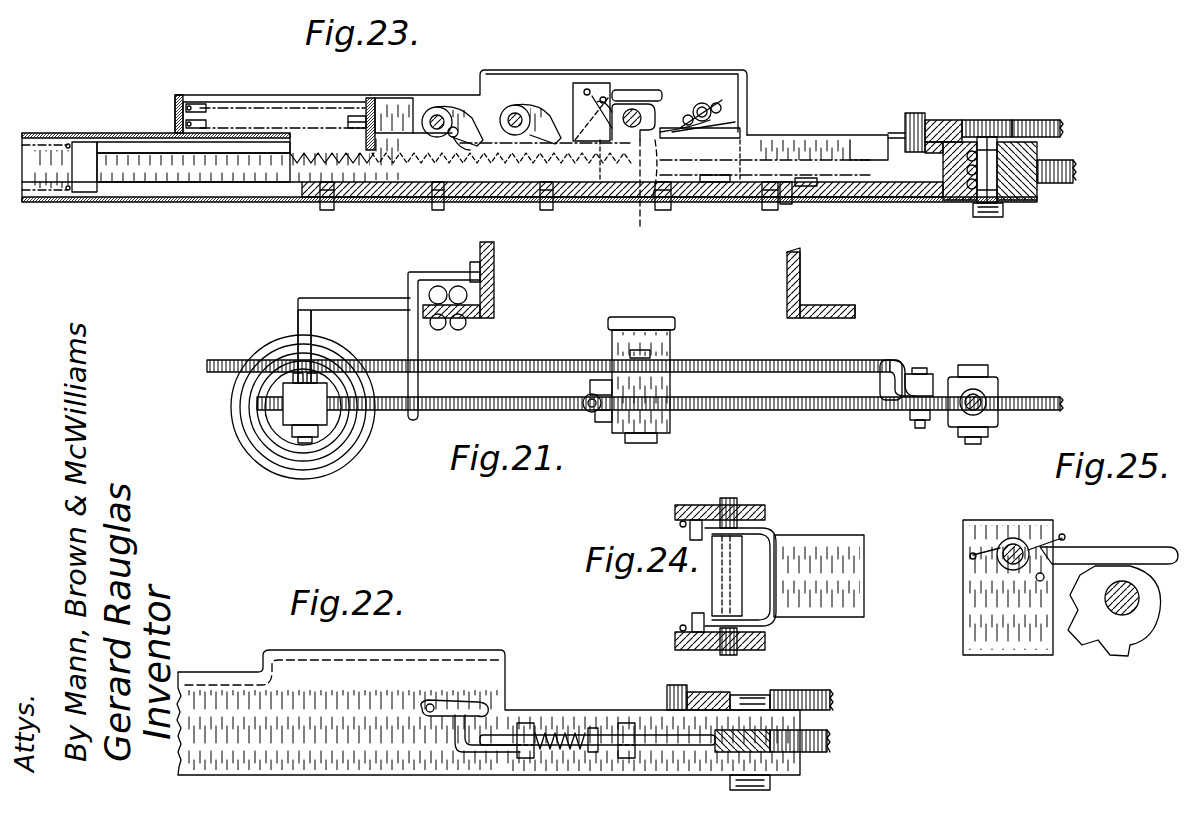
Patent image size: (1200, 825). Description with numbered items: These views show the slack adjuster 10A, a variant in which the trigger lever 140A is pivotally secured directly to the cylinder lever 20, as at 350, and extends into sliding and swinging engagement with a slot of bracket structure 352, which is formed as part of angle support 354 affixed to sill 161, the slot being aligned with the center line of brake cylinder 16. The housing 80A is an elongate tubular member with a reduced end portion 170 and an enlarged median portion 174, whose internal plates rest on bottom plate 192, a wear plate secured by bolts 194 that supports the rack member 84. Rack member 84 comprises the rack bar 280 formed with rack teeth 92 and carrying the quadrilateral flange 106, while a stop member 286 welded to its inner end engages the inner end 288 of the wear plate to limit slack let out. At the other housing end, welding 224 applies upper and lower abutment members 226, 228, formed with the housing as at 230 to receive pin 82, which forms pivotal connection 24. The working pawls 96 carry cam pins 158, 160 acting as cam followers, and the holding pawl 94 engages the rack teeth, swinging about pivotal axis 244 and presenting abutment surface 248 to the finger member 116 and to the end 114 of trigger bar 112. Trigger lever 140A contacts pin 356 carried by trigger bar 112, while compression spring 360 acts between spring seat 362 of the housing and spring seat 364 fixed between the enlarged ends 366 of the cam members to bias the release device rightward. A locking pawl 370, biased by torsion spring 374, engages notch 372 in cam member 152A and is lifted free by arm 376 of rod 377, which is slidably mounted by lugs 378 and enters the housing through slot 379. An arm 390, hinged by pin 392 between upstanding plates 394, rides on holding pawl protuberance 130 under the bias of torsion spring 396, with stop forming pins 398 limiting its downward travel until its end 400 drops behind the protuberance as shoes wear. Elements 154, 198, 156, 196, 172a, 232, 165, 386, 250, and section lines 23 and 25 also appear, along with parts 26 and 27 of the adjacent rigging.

In FIG. 23, the reduced end portion 170 is at (100, 118).
In FIG. 23, the quadrilateral flange 106 is at (85, 180).
In FIG. 23, the rack bar 280 is at (282, 167).
In FIG. 23, the rack member 84 is at (225, 178).
In FIG. 23, the rack teeth 92 is at (333, 184).
In FIG. 23, the slack adjuster 10A is at (303, 222).
In FIG. 21, the slack adjuster 10A is at (688, 330).
In FIG. 22, the slack adjuster 10A is at (250, 635).
In FIG. 23, the compression spring 360 is at (286, 100).
In FIG. 23, the spring seat 362 is at (205, 104).
In FIG. 23, the spring seat 364 is at (360, 118).
In FIG. 23, the enlarged ends 366 is at (392, 98).
In FIG. 23, the cover housing 154 is at (447, 128).
In FIG. 23, the pivot pins 198 is at (430, 112).
In FIG. 23, the working pawls 96 is at (445, 108).
In FIG. 23, the cam arm 156 is at (435, 132).
In FIG. 23, the cam pin 160 is at (457, 139).
In FIG. 23, the upstanding plates 394 is at (588, 141).
In FIG. 24, the upstanding plates 394 is at (770, 515).
In FIG. 25, the upstanding plates 394 is at (1030, 645).
In FIG. 23, the pin 392 is at (587, 86).
In FIG. 24, the pin 392 is at (738, 500).
In FIG. 25, the pin 392 is at (1015, 538).
In FIG. 23, the torsion spring 396 is at (612, 100).
In FIG. 24, the torsion spring 396 is at (780, 534).
In FIG. 25, the torsion spring 396 is at (1040, 562).
In FIG. 23, the stop forming pins 398 is at (612, 96).
In FIG. 25, the stop forming pins 398 is at (1046, 577).
In FIG. 23, the arm 390 is at (640, 90).
In FIG. 24, the arm 390 is at (852, 550).
In FIG. 25, the arm 390 is at (1086, 547).
In FIG. 23, the holding pawl 94 is at (622, 132).
In FIG. 23, the cam 196 is at (642, 118).
In FIG. 25, the cam 196 is at (1140, 608).
In FIG. 23, the holding pawl protuberance 130 is at (690, 110).
In FIG. 25, the holding pawl protuberance 130 is at (1140, 568).
In FIG. 23, the pivotal connection 24 is at (563, 88).
In FIG. 23, the enlarged median portion 174 is at (728, 70).
In FIG. 23, the locking pawl 370 is at (722, 100).
In FIG. 23, the torsion spring 374 is at (735, 120).
In FIG. 23, the arm 376 is at (750, 118).
In FIG. 21, the arm 376 is at (605, 365).
In FIG. 22, the arm 376 is at (482, 705).
In FIG. 23, the finger member 116 is at (633, 192).
In FIG. 23, the bottom plate 192 is at (590, 197).
In FIG. 23, the cam pin 158 is at (515, 212).
In FIG. 23, the notch 372 is at (672, 210).
In FIG. 23, the end of trigger bar 114 is at (704, 195).
In FIG. 23, the bolts 194 is at (770, 204).
In FIG. 23, the inner end of wear plate 288 is at (788, 208).
In FIG. 23, the stop member 286 is at (810, 186).
In FIG. 23, the cam member 152A is at (830, 235).
In FIG. 23, the trigger bar 112 is at (896, 165).
In FIG. 23, the drive unit 172a is at (855, 115).
In FIG. 23, the end plate 232 is at (900, 135).
In FIG. 23, the pin 356 is at (935, 122).
In FIG. 22, the pin 356 is at (680, 690).
In FIG. 23, the trigger lever 140A is at (985, 120).
In FIG. 21, the trigger lever 140A is at (752, 362).
In FIG. 22, the trigger lever 140A is at (808, 690).
In FIG. 23, the upper abutment member 226 is at (1035, 120).
In FIG. 23, the pin receiving formation 230 is at (962, 184).
In FIG. 23, the welding 224 is at (1040, 160).
In FIG. 23, the cylinder lever 20 is at (1062, 182).
In FIG. 21, the cylinder lever 20 is at (800, 410).
In FIG. 22, the cylinder lever 20 is at (835, 742).
In FIG. 23, the pin 82 is at (975, 214).
In FIG. 22, the pin 82 is at (755, 696).
In FIG. 23, the lower abutment member 228 is at (1022, 200).
In FIG. 21, the brake cylinder 16 is at (358, 445).
In FIG. 21, the bracket structure 352 is at (295, 318).
In FIG. 21, the angle support 354 is at (380, 282).
In FIG. 21, the lever rod 165 is at (440, 270).
In FIG. 21, the sill 161 is at (497, 274).
In FIG. 21, the lugs 378 is at (600, 418).
In FIG. 22, the lugs 378 is at (525, 722).
In FIG. 21, the section line 23 is at (665, 298).
In FIG. 21, the pivotal connection 350 is at (935, 370).
In FIG. 21, the clamp block 26 is at (985, 398).
In FIG. 21, the clamp nut 27 is at (985, 368).
In FIG. 22, the housing 80A is at (232, 700).
In FIG. 22, the slot 379 is at (440, 690).
In FIG. 22, the spring 386 is at (560, 730).
In FIG. 22, the rod 377 is at (600, 728).
In FIG. 24, the section line 25 is at (652, 620).
In FIG. 25, the pivotal axis 244 is at (1112, 612).
In FIG. 25, the notch 250 is at (1128, 566).
In FIG. 25, the end of arm 400 is at (1178, 547).
In FIG. 25, the abutment surface 248 is at (1130, 656).